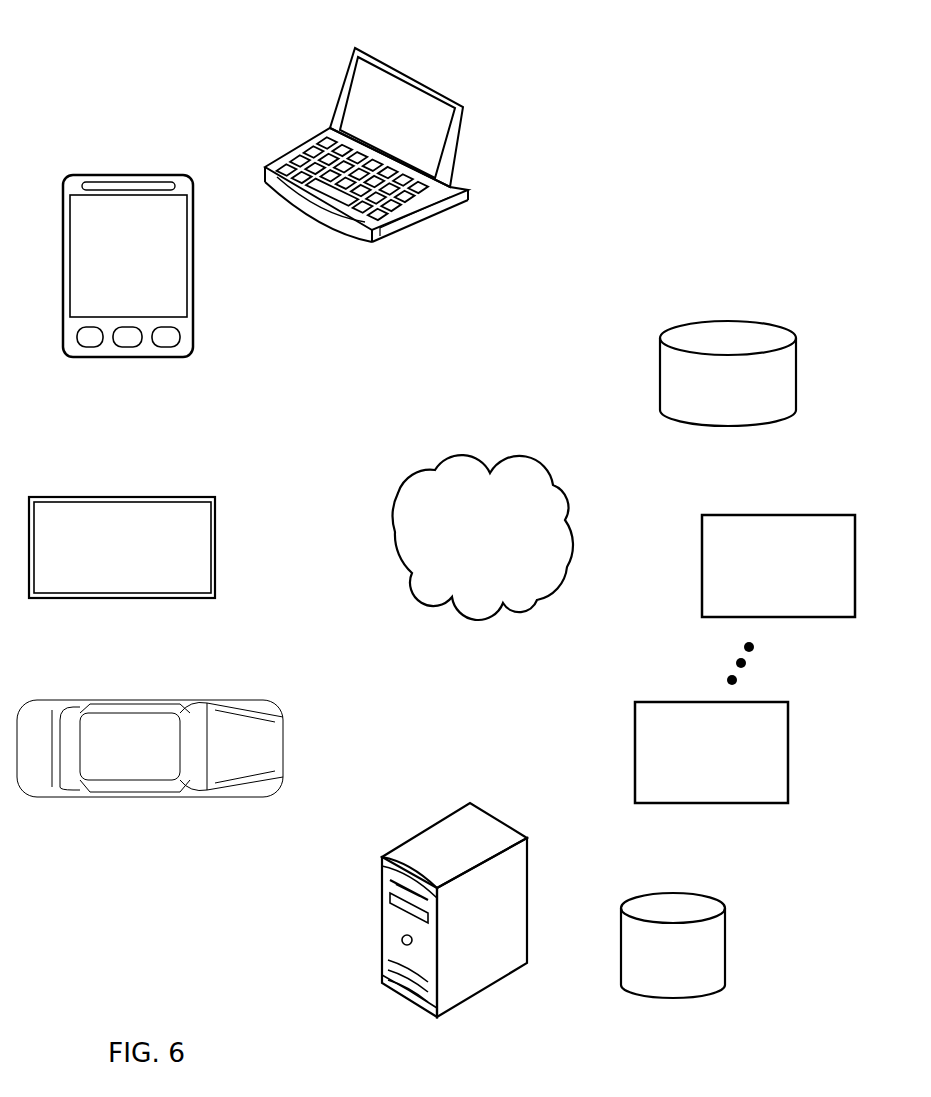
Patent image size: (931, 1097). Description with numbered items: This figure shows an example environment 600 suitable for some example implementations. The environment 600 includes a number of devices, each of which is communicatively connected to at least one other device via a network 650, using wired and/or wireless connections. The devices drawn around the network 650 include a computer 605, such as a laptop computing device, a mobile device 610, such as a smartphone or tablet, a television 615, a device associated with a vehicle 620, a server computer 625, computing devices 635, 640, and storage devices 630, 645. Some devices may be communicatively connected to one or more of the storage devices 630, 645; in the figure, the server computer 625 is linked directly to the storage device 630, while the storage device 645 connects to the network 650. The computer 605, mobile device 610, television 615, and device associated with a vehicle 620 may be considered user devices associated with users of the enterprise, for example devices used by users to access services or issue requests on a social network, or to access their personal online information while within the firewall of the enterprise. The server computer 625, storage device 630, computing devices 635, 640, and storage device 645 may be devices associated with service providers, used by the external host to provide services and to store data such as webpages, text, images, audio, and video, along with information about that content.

The environment 600 is at (147, 42).
The computer 605 is at (442, 446).
The mobile device 610 is at (394, 479).
The television 615 is at (382, 553).
The device associated with a vehicle 620 is at (408, 606).
The server computer 625 is at (470, 633).
The storage device 630 is at (539, 947).
The computing device 635 is at (549, 612).
The computing device 640 is at (586, 550).
The storage device 645 is at (556, 463).
The network 650 is at (467, 569).